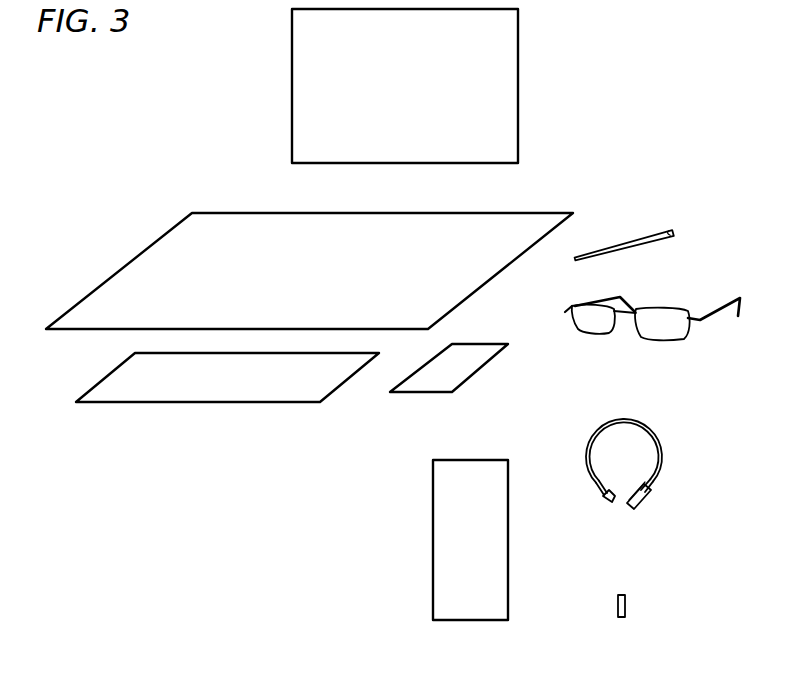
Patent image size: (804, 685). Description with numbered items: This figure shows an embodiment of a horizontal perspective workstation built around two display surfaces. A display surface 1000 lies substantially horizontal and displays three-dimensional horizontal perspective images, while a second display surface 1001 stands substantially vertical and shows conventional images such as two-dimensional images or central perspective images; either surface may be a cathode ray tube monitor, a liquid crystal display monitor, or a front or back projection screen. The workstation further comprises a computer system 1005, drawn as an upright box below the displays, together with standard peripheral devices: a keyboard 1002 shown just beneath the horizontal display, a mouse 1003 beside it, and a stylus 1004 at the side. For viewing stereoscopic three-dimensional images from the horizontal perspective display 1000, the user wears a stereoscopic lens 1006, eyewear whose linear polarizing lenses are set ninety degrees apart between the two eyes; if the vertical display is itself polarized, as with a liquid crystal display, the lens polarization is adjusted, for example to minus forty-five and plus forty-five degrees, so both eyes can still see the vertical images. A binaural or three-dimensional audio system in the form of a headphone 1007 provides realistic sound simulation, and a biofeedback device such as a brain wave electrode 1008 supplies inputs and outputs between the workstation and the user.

The display surface 1000 is at (158, 320).
The display surface 1001 is at (353, 151).
The keyboard 1002 is at (166, 394).
The mouse 1003 is at (449, 382).
The stylus 1004 is at (655, 229).
The computer system 1005 is at (496, 609).
The stereoscopic lens 1006 is at (670, 307).
The headphone 1007 is at (626, 418).
The brain wave electrode 1008 is at (623, 593).